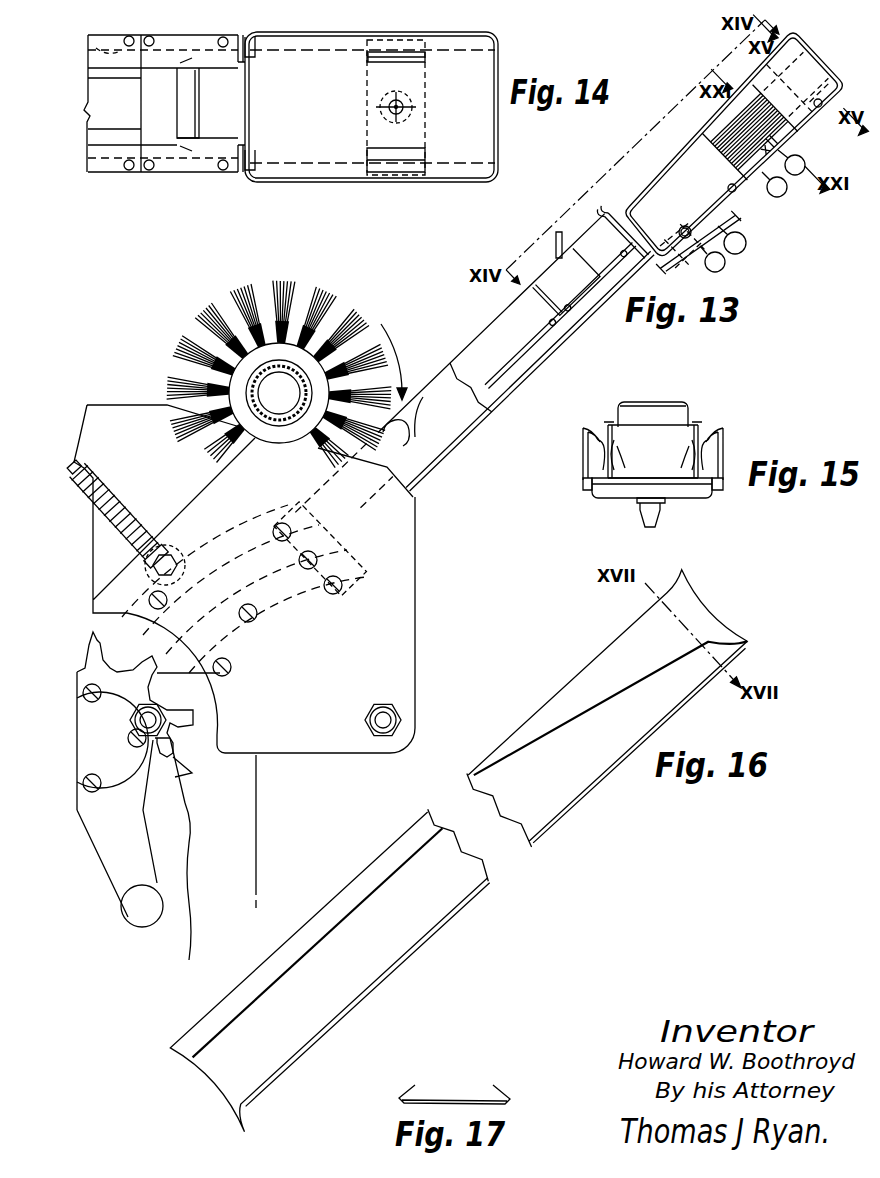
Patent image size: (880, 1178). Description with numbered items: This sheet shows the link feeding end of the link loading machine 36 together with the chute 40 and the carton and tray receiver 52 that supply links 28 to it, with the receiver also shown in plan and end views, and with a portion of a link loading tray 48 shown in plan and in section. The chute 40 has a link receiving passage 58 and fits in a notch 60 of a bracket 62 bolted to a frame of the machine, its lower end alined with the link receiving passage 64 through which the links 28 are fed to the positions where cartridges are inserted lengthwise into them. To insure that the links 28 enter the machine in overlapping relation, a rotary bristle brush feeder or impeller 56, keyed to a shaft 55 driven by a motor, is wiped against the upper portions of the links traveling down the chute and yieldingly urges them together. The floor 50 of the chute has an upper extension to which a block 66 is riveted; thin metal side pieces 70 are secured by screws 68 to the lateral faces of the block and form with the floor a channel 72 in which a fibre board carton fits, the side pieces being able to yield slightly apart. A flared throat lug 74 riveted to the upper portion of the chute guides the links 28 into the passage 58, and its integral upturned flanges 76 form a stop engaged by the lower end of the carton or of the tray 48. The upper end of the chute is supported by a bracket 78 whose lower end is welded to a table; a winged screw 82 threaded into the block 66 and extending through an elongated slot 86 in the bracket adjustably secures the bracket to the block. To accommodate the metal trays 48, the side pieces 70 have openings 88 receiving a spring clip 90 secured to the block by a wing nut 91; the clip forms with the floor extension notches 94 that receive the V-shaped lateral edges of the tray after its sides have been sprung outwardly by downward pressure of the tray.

In FIG. 13, the links 28 is at (420, 420).
In FIG. 13, the link loading machine 36 is at (113, 392).
In FIG. 14, the chute 40 is at (120, 36).
In FIG. 13, the chute 40 is at (513, 353).
In FIG. 15, the chute 40 is at (692, 422).
In FIG. 16, the metal tray 48 is at (557, 689).
In FIG. 14, the floor 50 is at (213, 67).
In FIG. 13, the floor 50 is at (563, 340).
In FIG. 15, the floor 50 is at (683, 472).
In FIG. 14, the carton or tray receiver 52 is at (410, 22).
In FIG. 13, the carton or tray receiver 52 is at (674, 141).
In FIG. 15, the carton or tray receiver 52 is at (660, 391).
In FIG. 13, the shaft 55 is at (284, 374).
In FIG. 13, the rotary bristle brush feeder or impeller 56 is at (348, 282).
In FIG. 14, the link receiving passage 58 is at (108, 46).
In FIG. 13, the link receiving passage 58 is at (413, 412).
In FIG. 15, the link receiving passage 58 is at (612, 467).
In FIG. 13, the notch 60 is at (368, 548).
In FIG. 13, the bracket 62 is at (416, 526).
In FIG. 13, the link receiving passage 64 is at (280, 624).
In FIG. 13, the block 66 is at (820, 120).
In FIG. 15, the block 66 is at (677, 493).
In FIG. 13, the screws 68 is at (727, 188).
In FIG. 14, the side pieces 70 is at (473, 34).
In FIG. 13, the side pieces 70 is at (658, 192).
In FIG. 15, the side pieces 70 is at (707, 443).
In FIG. 14, the channel 72 is at (310, 50).
In FIG. 13, the channel 72 is at (673, 222).
In FIG. 15, the channel 72 is at (600, 449).
In FIG. 14, the flared throat lug 74 is at (162, 62).
In FIG. 13, the flared throat lug 74 is at (547, 277).
In FIG. 15, the flared throat lug 74 is at (703, 427).
In FIG. 14, the upturned flanges 76 is at (243, 38).
In FIG. 13, the upturned flanges 76 is at (612, 226).
In FIG. 13, the bracket 78 is at (734, 224).
In FIG. 13, the winged screw 82 is at (742, 252).
In FIG. 13, the elongated slot 86 is at (687, 230).
In FIG. 14, the openings 88 is at (413, 43).
In FIG. 13, the openings 88 is at (822, 102).
In FIG. 14, the spring clip 90 is at (368, 53).
In FIG. 13, the spring clip 90 is at (768, 103).
In FIG. 15, the spring clip 90 is at (607, 447).
In FIG. 13, the wing nut 91 is at (785, 192).
In FIG. 15, the wing nut 91 is at (650, 527).
In FIG. 15, the notches 94 is at (710, 463).